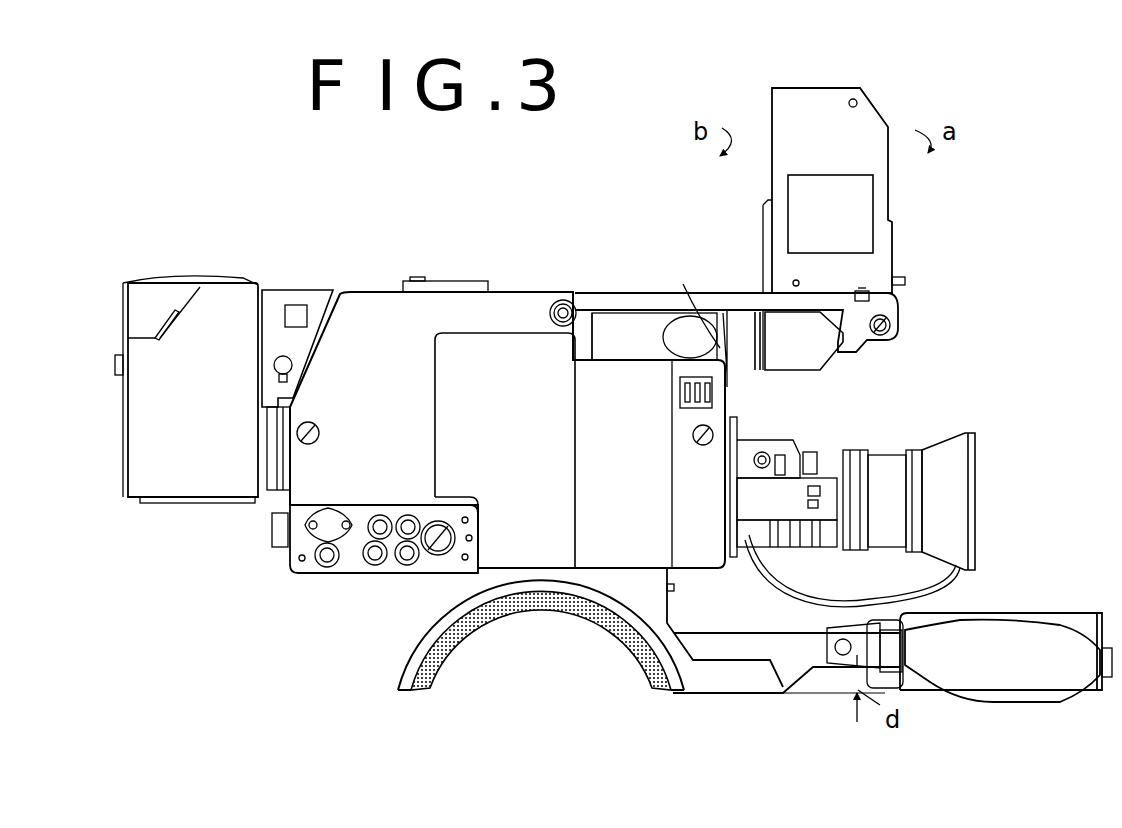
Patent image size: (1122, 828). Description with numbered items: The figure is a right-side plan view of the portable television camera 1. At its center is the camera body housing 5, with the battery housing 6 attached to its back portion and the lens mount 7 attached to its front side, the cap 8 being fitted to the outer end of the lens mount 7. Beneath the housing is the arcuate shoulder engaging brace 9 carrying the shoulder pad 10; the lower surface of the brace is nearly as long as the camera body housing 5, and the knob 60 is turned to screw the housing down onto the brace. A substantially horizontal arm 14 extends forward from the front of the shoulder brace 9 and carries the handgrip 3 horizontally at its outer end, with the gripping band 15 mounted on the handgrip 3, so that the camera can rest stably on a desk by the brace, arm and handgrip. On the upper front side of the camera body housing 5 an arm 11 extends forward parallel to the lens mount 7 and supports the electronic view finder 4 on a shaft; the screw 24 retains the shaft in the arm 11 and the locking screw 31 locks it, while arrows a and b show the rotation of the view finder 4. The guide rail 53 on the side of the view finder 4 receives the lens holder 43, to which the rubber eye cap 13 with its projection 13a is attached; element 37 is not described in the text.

The portable television camera 1 is at (379, 293).
The handgrip 3 is at (1090, 622).
The electronic view finder 4 is at (820, 118).
The camera body housing 5 is at (516, 305).
The battery housing 6 is at (220, 310).
The lens mount 7 is at (890, 462).
The cap 8 is at (976, 495).
The arcuate shoulder engaging brace 9 is at (432, 627).
The shoulder pad 10 is at (530, 606).
The arm 11 is at (620, 302).
The eye cap 13 is at (737, 366).
The projection 13a is at (668, 337).
The horizontal arm 14 is at (790, 660).
The gripping band 15 is at (1003, 686).
The screw 24 is at (892, 325).
The locking screw 31 is at (868, 292).
The arm 37 is at (693, 303).
The lens holder 43 is at (758, 318).
The guide rail 53 is at (766, 220).
The knob 60 is at (680, 589).